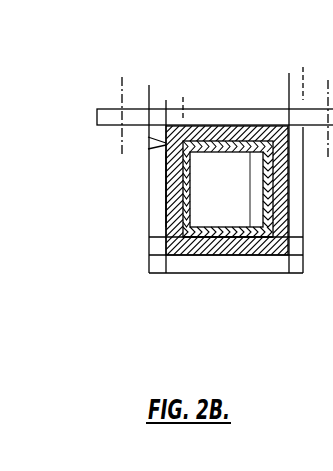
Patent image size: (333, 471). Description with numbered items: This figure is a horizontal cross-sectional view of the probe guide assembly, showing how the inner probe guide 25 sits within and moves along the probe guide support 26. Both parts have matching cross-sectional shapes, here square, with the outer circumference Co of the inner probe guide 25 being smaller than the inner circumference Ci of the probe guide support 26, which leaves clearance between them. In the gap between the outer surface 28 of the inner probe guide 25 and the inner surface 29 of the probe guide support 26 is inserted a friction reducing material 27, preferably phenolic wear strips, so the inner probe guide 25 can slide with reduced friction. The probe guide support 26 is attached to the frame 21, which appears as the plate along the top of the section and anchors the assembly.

The frame 21 is at (111, 109).
The inner probe guide 25 is at (222, 126).
The probe guide support 26 is at (160, 191).
The friction reducing material 27 is at (247, 247).
The outer surface 28 is at (198, 256).
The inner surface 29 is at (273, 253).
The inner circumference Ci is at (166, 226).
The outer circumference Co is at (190, 240).